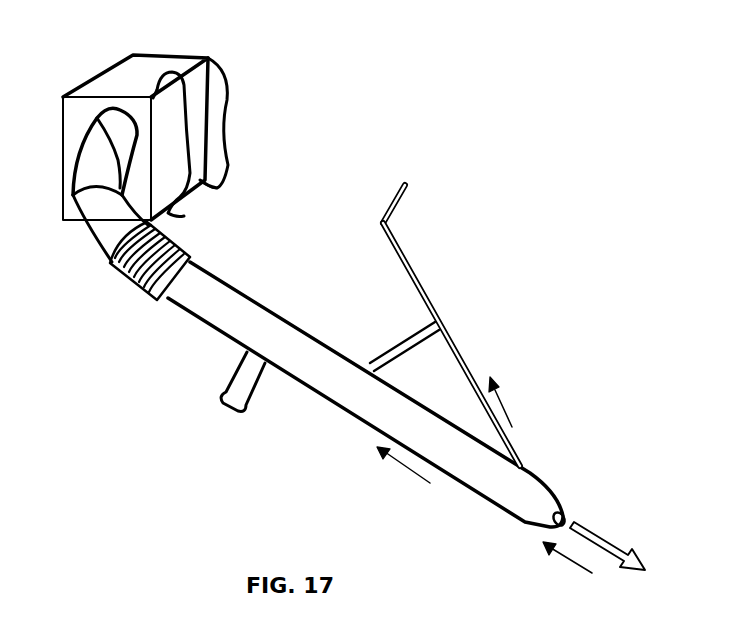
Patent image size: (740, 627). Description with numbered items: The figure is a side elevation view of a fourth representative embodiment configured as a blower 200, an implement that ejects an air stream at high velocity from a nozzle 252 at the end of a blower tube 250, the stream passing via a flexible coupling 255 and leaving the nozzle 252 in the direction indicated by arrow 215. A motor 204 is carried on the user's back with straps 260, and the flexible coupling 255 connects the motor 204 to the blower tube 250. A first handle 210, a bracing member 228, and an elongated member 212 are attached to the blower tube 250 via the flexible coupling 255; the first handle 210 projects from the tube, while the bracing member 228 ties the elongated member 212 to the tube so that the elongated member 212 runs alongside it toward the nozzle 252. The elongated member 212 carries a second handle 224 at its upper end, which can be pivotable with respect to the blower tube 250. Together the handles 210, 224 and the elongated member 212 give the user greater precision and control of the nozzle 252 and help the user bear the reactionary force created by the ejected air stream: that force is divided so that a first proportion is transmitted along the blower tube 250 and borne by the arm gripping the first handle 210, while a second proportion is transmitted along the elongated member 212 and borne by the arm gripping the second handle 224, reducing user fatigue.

The blower 200 is at (499, 83).
The motor 204 is at (84, 91).
The first handle 210 is at (245, 378).
The elongated member 212 is at (467, 365).
The arrow 215 is at (600, 535).
The second handle 224 is at (412, 184).
The bracing member 228 is at (403, 333).
The blower tube 250 is at (328, 398).
The nozzle 252 is at (552, 503).
The flexible coupling 255 is at (134, 280).
The straps 260 is at (228, 120).